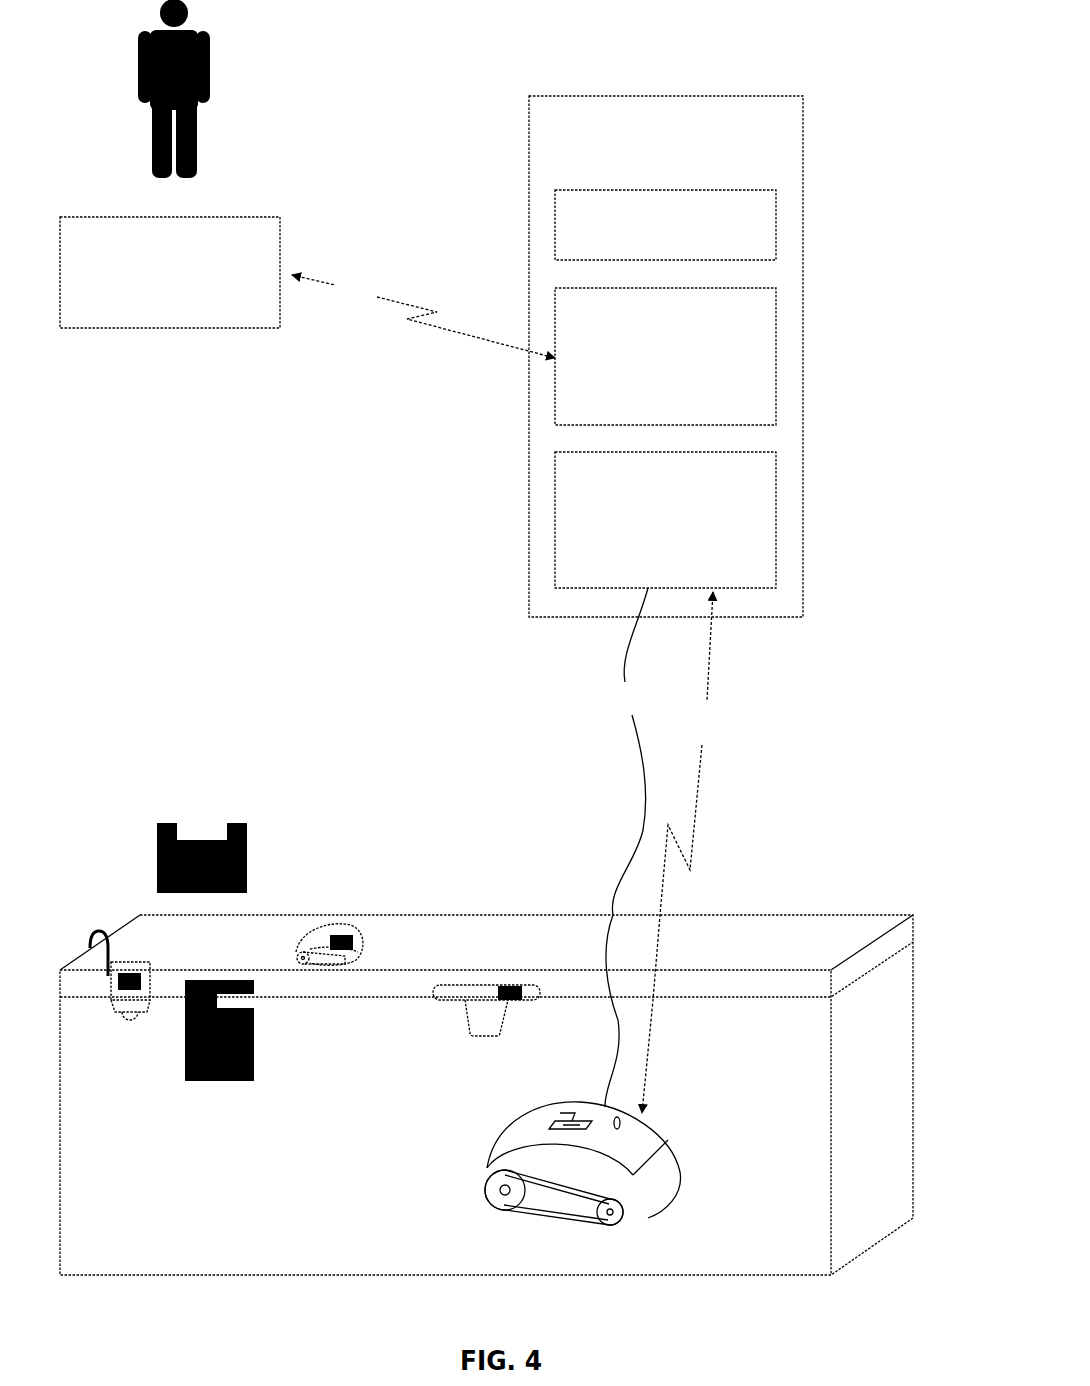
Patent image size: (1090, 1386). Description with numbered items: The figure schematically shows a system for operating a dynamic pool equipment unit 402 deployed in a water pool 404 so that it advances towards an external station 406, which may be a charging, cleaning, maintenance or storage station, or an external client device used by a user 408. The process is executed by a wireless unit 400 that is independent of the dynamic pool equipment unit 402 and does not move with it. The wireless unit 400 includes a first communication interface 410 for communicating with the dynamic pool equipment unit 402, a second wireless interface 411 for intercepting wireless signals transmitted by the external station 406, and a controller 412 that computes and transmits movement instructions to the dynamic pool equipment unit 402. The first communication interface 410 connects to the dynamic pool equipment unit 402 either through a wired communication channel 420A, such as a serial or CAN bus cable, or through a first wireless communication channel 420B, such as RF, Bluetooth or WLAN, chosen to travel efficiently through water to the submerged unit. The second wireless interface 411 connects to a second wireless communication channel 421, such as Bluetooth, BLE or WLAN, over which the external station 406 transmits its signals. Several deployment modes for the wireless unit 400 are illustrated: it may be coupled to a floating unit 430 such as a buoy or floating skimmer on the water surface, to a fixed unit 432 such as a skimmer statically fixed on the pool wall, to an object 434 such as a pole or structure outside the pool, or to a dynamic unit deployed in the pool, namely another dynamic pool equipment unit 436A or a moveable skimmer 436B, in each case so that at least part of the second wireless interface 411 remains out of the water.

The wireless unit 400 is at (798, 97).
The dynamic pool equipment unit 402 is at (650, 1136).
The water pool 404 is at (893, 872).
The external station 406 is at (280, 217).
The user 408 is at (150, 32).
The first communication interface 410 is at (665, 520).
The second wireless interface 411 is at (665, 356).
The controller 412 is at (665, 225).
The wired communication channel 420A is at (621, 847).
The first wireless communication channel 420B is at (692, 852).
The second wireless communication channel 421 is at (423, 314).
The floating unit 430 is at (445, 977).
The fixed unit 432 is at (183, 1050).
The object 434 is at (251, 840).
The dynamic pool equipment unit 436A is at (297, 941).
The moveable skimmer 436B is at (163, 945).